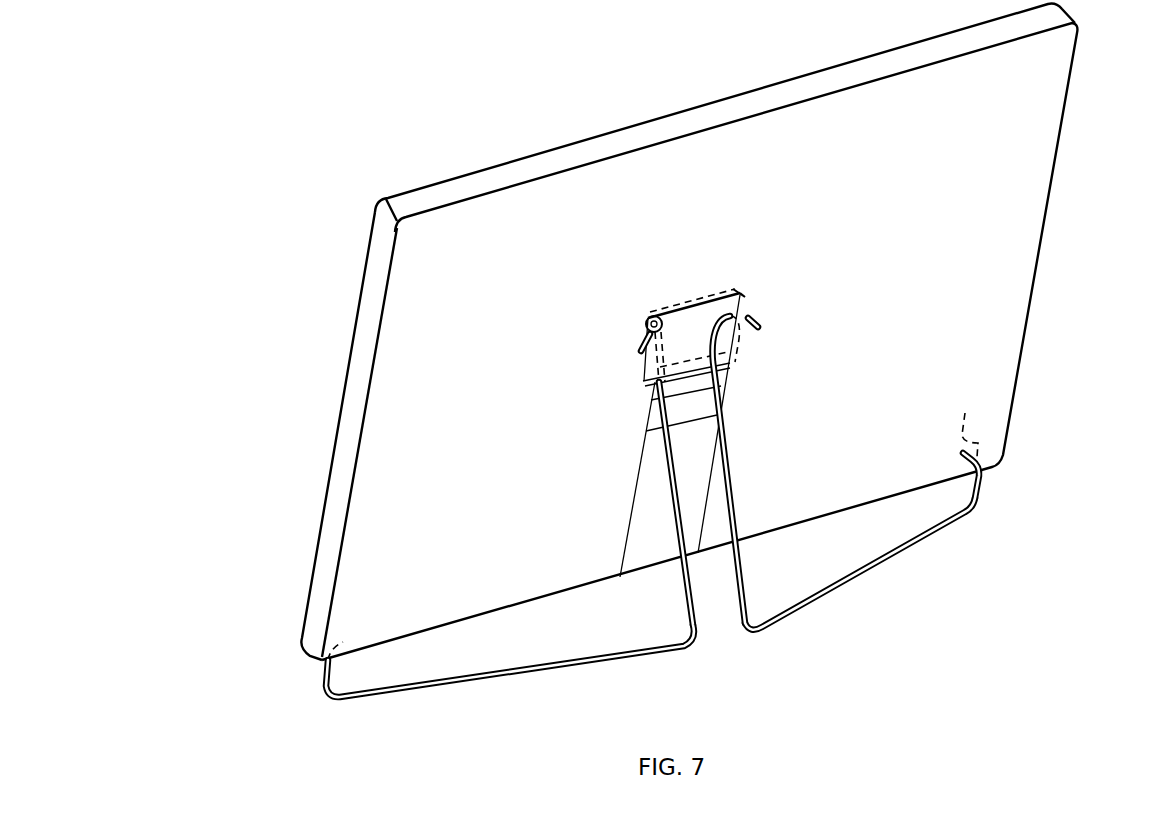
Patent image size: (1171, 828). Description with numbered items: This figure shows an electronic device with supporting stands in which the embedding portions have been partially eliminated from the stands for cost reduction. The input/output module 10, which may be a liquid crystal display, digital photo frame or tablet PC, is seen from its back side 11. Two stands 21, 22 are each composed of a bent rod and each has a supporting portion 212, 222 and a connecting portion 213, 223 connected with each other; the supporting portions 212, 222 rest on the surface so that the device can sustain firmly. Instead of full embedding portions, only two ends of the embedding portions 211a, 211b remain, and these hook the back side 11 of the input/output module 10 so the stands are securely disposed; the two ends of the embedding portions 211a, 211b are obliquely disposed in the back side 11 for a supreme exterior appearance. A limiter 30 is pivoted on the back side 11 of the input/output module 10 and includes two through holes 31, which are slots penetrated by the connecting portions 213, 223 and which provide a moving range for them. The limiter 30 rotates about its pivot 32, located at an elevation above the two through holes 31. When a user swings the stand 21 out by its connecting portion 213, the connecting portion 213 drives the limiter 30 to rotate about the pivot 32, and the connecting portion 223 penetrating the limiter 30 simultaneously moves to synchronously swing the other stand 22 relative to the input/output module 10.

The input/output module 10 is at (372, 250).
The back side 11 is at (1038, 160).
The stand 21 is at (703, 505).
The stand 22 is at (516, 544).
The limiter 30 is at (717, 293).
The through hole 31 is at (735, 378).
The pivot 32 is at (640, 318).
The end of the embedding portion 211a is at (752, 313).
The end of the embedding portion 211b is at (982, 440).
The supporting portion 212 is at (900, 554).
The connecting portion 213 is at (743, 587).
The supporting portion 222 is at (475, 683).
The connecting portion 223 is at (687, 593).